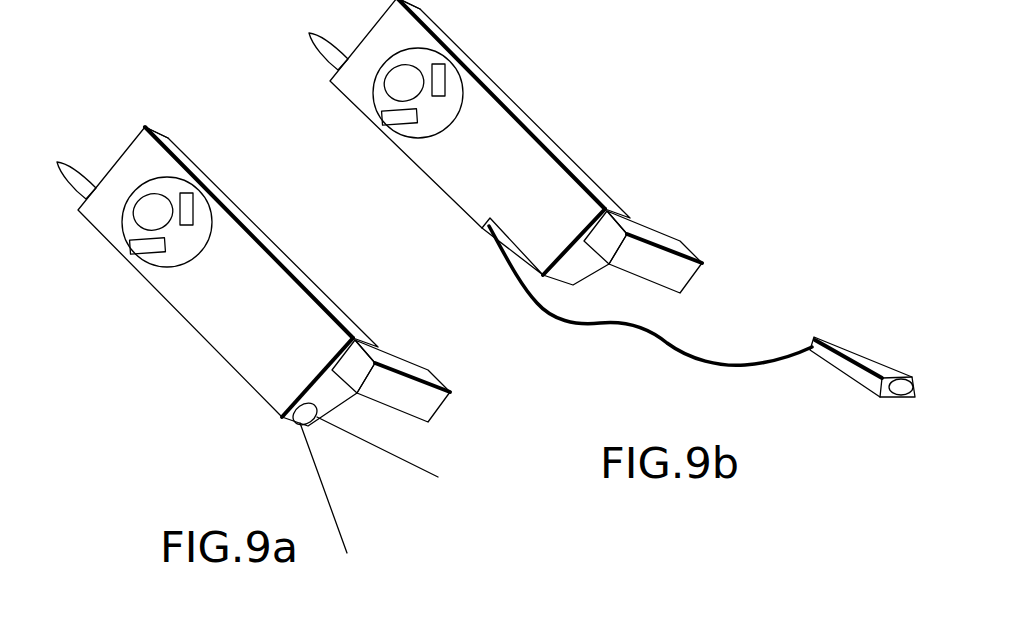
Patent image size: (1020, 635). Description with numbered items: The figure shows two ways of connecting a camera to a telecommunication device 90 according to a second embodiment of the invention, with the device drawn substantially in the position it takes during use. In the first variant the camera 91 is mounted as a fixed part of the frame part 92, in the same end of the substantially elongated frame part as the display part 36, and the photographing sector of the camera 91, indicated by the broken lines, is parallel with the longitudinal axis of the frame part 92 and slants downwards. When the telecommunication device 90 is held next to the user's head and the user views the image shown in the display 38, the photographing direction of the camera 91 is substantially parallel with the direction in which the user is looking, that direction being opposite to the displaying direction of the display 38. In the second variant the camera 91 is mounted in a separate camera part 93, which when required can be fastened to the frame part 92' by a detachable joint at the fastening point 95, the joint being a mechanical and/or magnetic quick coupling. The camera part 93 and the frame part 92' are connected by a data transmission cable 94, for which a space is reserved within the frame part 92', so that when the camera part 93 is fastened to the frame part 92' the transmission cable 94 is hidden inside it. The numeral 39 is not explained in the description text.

In FIG. 9a, the display part 36 is at (438, 413).
In FIG. 9b, the display part 36 is at (678, 272).
In FIG. 9a, the display 38 is at (416, 381).
In FIG. 9b, the display 38 is at (666, 249).
In FIG. 9a, the end face with socket openings 39 is at (120, 235).
In FIG. 9b, the end face with socket openings 39 is at (372, 107).
In FIG. 9a, the telecommunication device 90 is at (190, 390).
In FIG. 9b, the telecommunication device 90 is at (587, 153).
In FIG. 9a, the camera 91 is at (318, 418).
In FIG. 9b, the camera 91 is at (901, 386).
In FIG. 9a, the frame part 92 is at (249, 272).
In FIG. 9b, the frame part 92' is at (501, 137).
In FIG. 9b, the camera part 93 is at (850, 348).
In FIG. 9b, the data transmission cable 94 is at (662, 340).
In FIG. 9b, the fastening point 95 is at (522, 253).